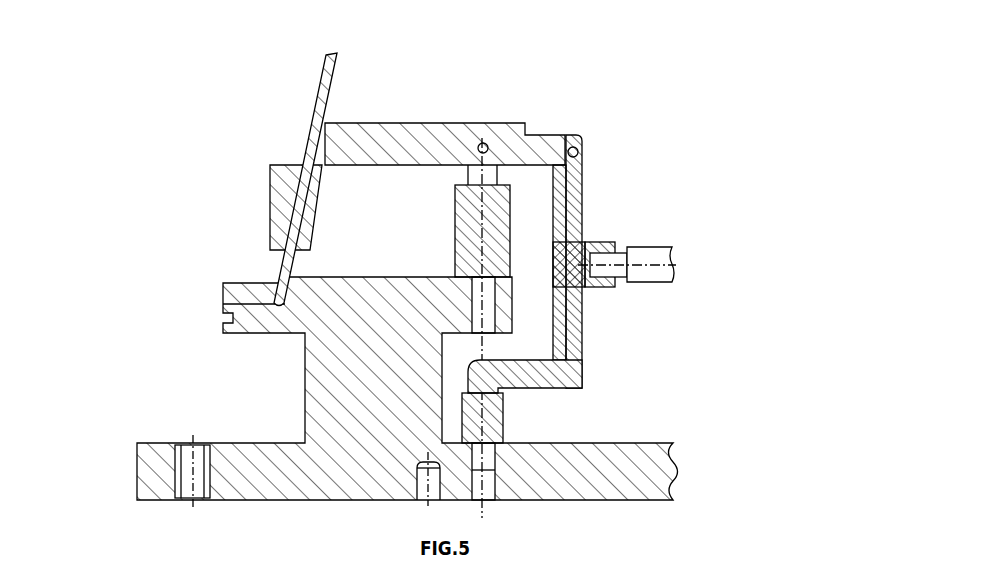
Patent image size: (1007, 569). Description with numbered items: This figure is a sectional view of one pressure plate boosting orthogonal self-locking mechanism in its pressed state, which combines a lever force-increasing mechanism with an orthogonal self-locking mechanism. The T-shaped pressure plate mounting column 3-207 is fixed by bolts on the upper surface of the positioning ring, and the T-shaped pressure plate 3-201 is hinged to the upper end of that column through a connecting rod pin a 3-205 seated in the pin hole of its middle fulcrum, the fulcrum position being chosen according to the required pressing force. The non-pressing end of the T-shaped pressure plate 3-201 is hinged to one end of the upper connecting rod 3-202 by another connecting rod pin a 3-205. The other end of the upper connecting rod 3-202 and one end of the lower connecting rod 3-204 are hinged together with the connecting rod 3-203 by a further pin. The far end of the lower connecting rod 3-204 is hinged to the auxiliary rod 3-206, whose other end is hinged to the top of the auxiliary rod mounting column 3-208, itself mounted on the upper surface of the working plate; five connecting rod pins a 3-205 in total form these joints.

The T-shaped pressure plate 3-201 is at (520, 153).
The upper connecting rod 3-202 is at (587, 195).
The connecting rod 3-203 is at (600, 242).
The lower connecting rod 3-204 is at (582, 308).
The connecting rod pin a 3-205 is at (488, 143).
The auxiliary rod 3-206 is at (577, 385).
The T-shaped pressure plate mounting column 3-207 is at (465, 230).
The auxiliary rod mounting column 3-208 is at (462, 410).